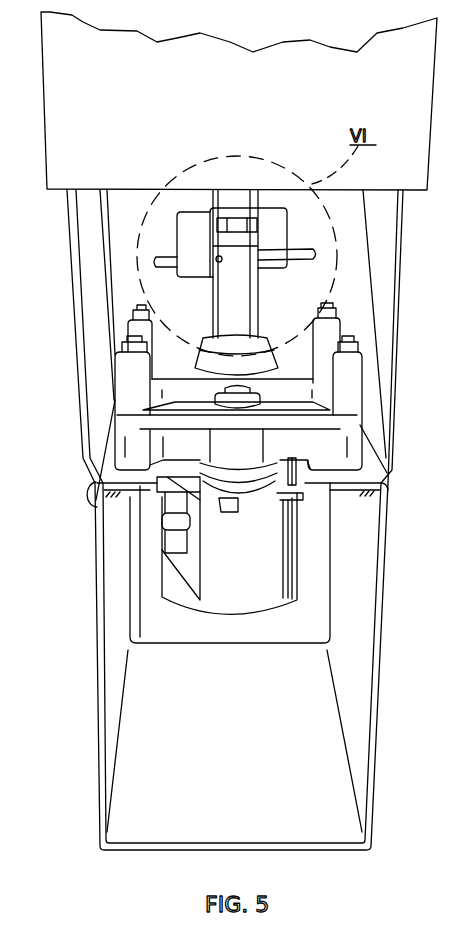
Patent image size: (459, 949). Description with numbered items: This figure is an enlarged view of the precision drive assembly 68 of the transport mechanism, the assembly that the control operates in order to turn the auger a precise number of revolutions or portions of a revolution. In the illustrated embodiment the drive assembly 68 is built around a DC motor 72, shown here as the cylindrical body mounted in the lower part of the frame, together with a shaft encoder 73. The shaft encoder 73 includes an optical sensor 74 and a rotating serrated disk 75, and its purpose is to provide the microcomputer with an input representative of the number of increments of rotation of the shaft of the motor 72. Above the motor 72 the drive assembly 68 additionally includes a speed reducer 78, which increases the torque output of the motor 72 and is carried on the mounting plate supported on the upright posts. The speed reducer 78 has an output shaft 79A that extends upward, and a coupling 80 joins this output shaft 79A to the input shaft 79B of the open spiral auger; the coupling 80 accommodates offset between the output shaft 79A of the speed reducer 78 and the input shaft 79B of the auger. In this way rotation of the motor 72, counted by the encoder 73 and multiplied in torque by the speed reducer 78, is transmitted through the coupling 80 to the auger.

The precision drive assembly 68 is at (112, 382).
The DC motor 72 is at (293, 557).
The shaft encoder 73 is at (212, 517).
The optical sensor 74 is at (150, 522).
The rotating serrated disk 75 is at (300, 497).
The speed reducer 78 is at (355, 407).
The output shaft 79A is at (258, 288).
The input shaft 79B is at (260, 192).
The coupling 80 is at (183, 228).